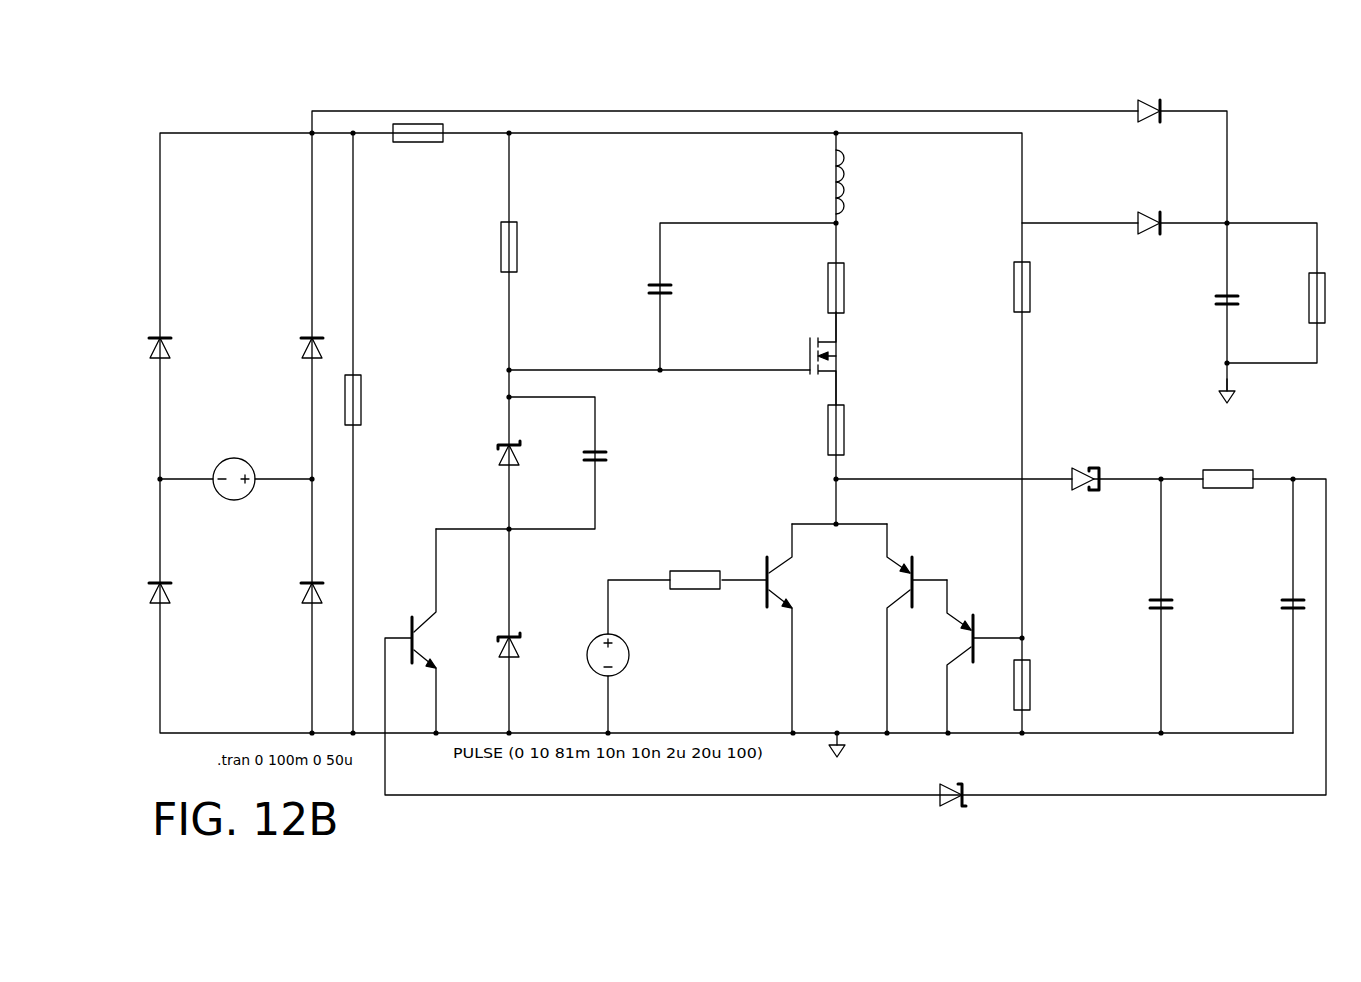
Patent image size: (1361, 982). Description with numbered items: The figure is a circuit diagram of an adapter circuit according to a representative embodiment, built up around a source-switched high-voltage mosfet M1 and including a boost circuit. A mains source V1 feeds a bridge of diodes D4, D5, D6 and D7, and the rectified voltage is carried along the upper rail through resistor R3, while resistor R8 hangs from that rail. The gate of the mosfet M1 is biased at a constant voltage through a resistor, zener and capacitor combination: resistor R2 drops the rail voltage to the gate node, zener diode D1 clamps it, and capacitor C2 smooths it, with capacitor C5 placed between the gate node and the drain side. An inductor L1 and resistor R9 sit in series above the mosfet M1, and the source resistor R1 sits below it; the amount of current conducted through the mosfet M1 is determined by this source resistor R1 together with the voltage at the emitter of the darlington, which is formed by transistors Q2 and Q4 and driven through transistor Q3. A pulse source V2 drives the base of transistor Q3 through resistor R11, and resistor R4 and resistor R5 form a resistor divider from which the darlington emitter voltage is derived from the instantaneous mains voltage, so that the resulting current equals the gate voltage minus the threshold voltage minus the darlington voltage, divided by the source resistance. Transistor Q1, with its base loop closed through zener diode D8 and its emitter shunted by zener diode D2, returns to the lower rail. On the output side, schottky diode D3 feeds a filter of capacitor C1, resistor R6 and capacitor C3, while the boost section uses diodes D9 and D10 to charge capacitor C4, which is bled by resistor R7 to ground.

The resistor R1 25 R1 is at (852, 430).
The resistor R2 200k R2 is at (536, 249).
The resistor R3 1 R3 is at (418, 146).
The resistor R4 470k R4 is at (1049, 288).
The resistor R5 39k R5 is at (1043, 685).
The resistor R6 10k R6 is at (1228, 479).
The resistor R7 5k R7 is at (1300, 306).
The resistor R8 10k R8 is at (373, 398).
The resistor R9 1 R9 is at (852, 289).
The resistor R11 1k R11 is at (695, 585).
The capacitor C1 10u C1 is at (1142, 603).
The capacitor C2 1u C2 is at (607, 459).
The capacitor C3 1u C3 is at (1278, 603).
The capacitor C4 22u C4 is at (1207, 306).
The capacitor C5 1p C5 is at (649, 290).
The zener diode D1 BZX84C10L D1 is at (506, 462).
The zener diode D2 BZX84C6V2L D2 is at (515, 647).
The Schottky diode D3 1N5819 D3 is at (1080, 480).
The diode D4 UPSC600 D4 is at (300, 372).
The diode D5 UPSC600 D5 is at (148, 372).
The diode D6 UPSC600 D6 is at (148, 618).
The diode D7 UPSC600 D7 is at (300, 618).
The zener diode D8 BZX84C8V2L D8 is at (946, 792).
The diode D9 UPSC600 D9 is at (1144, 224).
The diode D10 UPSC600 D10 is at (1144, 107).
The NPN transistor Q1 BC817-40 Q1 is at (438, 631).
The PNP transistor Q2 BC807-40 Q2 is at (888, 628).
The NPN transistor Q3 BC817-40 Q3 is at (793, 628).
The PNP transistor Q4 BC807-40 Q4 is at (949, 636).
The MOSFET M1 STP8NM60 M1 is at (868, 358).
The inductor L1 10n L1 is at (861, 183).
The sine voltage source V1 is at (236, 491).
The pulse voltage source V2 is at (625, 655).